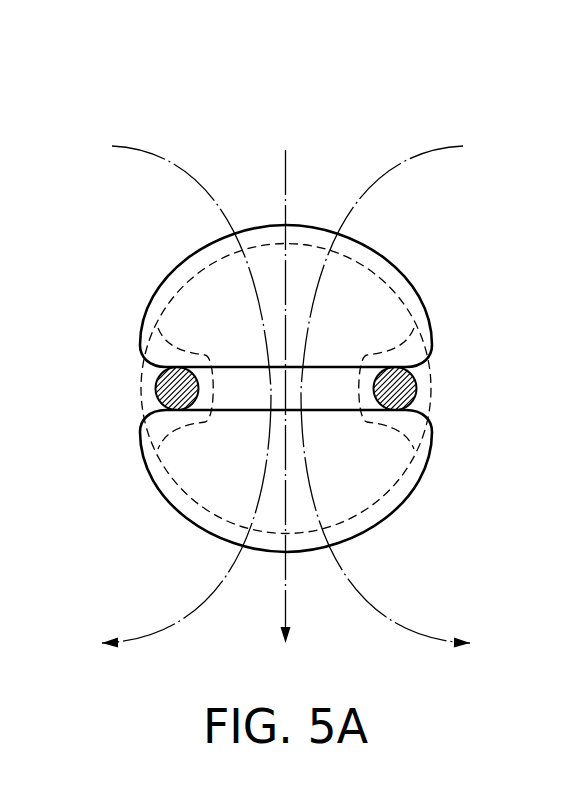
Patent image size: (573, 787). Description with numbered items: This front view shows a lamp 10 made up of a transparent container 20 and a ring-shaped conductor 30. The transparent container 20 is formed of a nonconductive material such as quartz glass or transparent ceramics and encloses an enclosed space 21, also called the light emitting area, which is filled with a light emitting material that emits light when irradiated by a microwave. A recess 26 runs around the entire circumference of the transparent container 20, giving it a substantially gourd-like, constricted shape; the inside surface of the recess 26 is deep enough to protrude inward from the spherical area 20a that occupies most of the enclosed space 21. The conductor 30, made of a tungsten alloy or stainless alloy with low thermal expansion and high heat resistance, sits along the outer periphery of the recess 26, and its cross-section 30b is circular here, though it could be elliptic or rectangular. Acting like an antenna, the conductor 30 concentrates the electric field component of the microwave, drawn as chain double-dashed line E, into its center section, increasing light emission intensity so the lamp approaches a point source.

The lamp 10 is at (281, 324).
The transparent container 20 is at (307, 226).
The spherical area 20a is at (388, 492).
The enclosed space 21 is at (320, 340).
The recess 26 is at (401, 374).
The conductor 30 is at (412, 372).
The cross-section of the conductor 30b is at (155, 389).
The electric field component concentration E is at (443, 143).